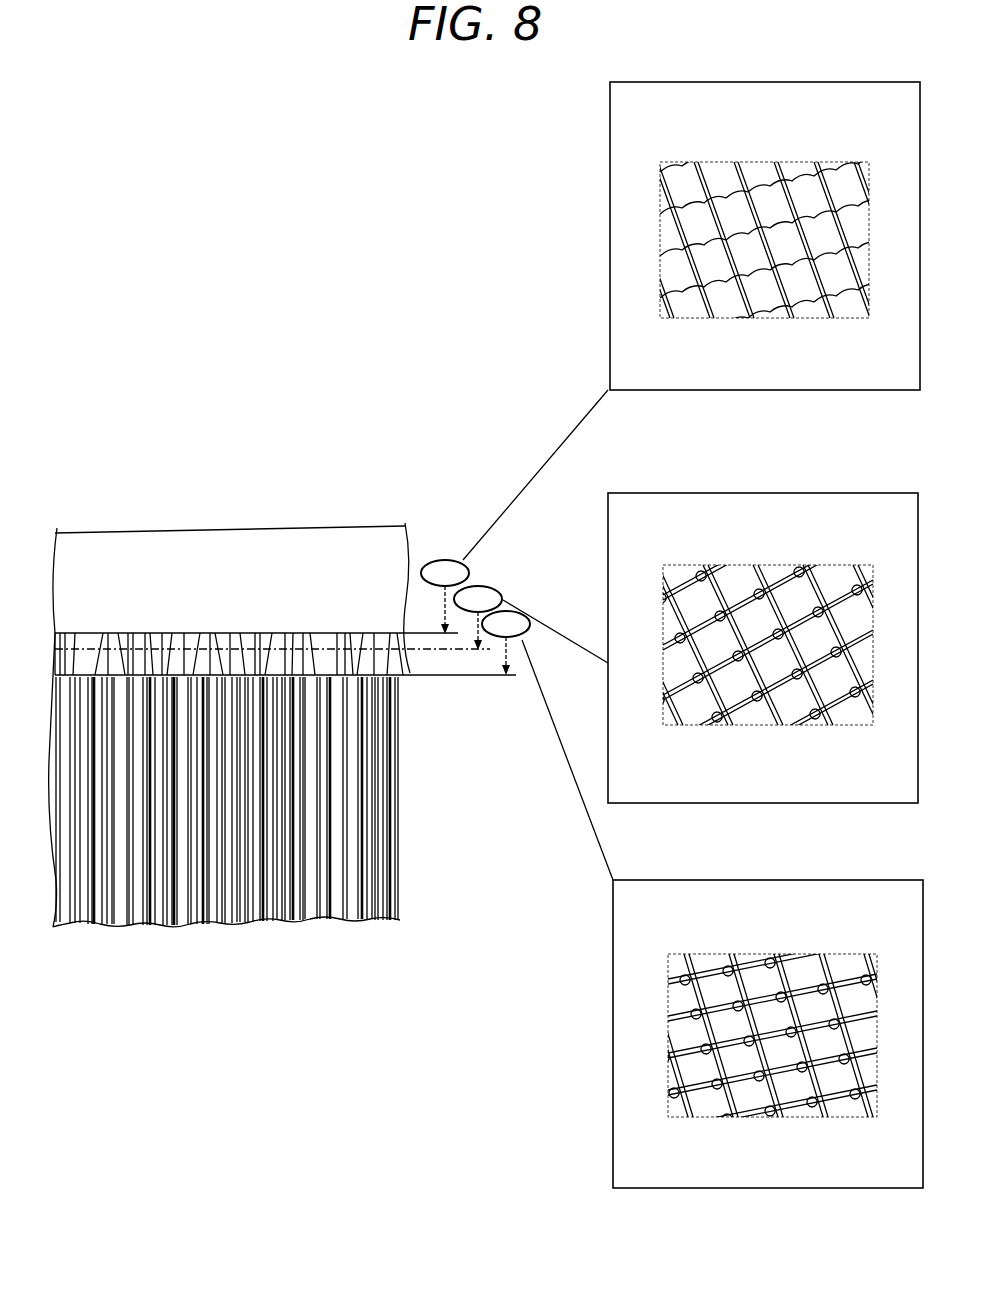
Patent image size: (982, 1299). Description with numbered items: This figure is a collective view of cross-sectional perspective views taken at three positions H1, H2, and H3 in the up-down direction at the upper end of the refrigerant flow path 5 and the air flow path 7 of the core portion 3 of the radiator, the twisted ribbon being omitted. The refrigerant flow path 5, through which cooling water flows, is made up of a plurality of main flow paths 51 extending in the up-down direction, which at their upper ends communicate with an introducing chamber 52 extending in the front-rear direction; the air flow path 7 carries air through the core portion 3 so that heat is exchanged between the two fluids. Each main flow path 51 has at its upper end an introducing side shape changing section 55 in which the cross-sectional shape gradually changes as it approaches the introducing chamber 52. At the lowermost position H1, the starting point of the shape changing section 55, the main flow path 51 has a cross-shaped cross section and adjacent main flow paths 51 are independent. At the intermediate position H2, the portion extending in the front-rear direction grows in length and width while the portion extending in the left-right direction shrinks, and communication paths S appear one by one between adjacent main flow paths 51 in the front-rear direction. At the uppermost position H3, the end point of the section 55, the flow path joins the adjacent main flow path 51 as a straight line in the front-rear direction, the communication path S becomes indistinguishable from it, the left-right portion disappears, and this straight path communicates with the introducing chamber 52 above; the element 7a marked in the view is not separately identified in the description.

The core portion 3 is at (238, 520).
The refrigerant flow path 5 is at (820, 166).
The air flow path 7 is at (755, 172).
The fiber 7a is at (797, 712).
The main flow path 51 is at (365, 910).
The introducing chamber 52 is at (80, 555).
The introducing side shape changing section 55 is at (362, 655).
The communication path S is at (698, 698).
The position H1 is at (702, 899).
The position H2 is at (686, 648).
The position H3 is at (670, 358).